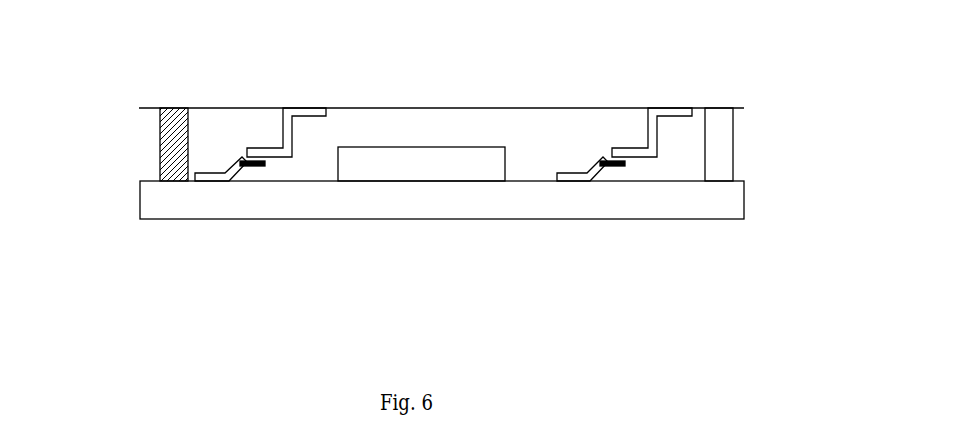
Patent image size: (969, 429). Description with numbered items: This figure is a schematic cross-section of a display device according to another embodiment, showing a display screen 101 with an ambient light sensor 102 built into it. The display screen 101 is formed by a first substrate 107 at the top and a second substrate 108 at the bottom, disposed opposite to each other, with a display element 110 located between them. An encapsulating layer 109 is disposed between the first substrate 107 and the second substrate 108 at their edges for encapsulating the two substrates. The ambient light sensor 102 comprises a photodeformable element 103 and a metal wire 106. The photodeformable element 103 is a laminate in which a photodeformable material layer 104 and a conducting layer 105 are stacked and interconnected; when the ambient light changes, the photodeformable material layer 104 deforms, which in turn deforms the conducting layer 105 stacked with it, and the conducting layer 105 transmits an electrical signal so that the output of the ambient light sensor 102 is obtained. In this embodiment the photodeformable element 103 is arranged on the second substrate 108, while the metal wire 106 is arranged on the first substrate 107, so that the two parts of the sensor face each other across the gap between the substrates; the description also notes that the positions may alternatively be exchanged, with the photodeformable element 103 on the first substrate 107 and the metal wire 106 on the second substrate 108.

The display screen 101 is at (770, 144).
The ambient light sensor 102 is at (443, 232).
The photodeformable element 103 is at (410, 237).
The photodeformable material layer 104 is at (562, 176).
The conducting layer 105 is at (432, 218).
The metal wire 106 is at (469, 212).
The first substrate 107 is at (441, 63).
The second substrate 108 is at (482, 226).
The encapsulating layer 109 is at (115, 144).
The display element 110 is at (414, 205).